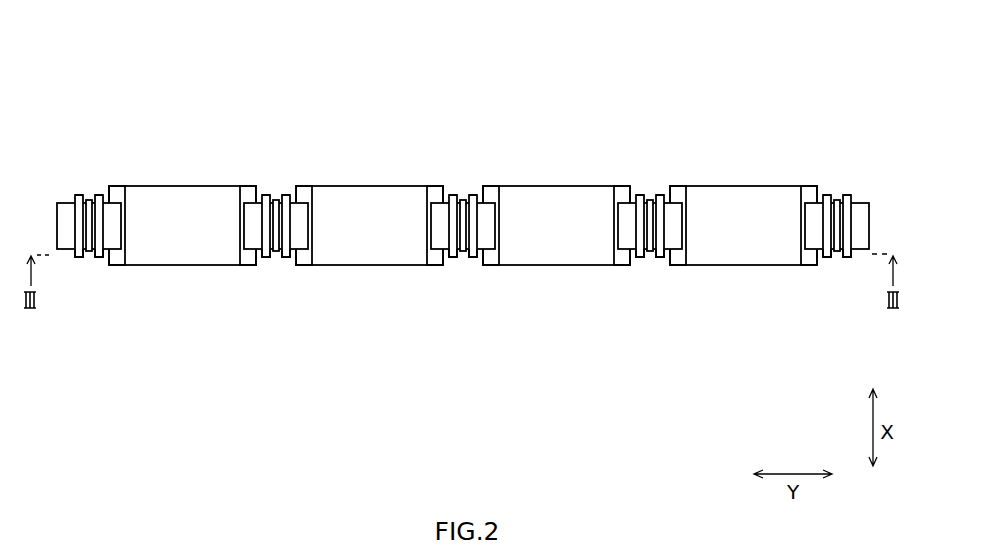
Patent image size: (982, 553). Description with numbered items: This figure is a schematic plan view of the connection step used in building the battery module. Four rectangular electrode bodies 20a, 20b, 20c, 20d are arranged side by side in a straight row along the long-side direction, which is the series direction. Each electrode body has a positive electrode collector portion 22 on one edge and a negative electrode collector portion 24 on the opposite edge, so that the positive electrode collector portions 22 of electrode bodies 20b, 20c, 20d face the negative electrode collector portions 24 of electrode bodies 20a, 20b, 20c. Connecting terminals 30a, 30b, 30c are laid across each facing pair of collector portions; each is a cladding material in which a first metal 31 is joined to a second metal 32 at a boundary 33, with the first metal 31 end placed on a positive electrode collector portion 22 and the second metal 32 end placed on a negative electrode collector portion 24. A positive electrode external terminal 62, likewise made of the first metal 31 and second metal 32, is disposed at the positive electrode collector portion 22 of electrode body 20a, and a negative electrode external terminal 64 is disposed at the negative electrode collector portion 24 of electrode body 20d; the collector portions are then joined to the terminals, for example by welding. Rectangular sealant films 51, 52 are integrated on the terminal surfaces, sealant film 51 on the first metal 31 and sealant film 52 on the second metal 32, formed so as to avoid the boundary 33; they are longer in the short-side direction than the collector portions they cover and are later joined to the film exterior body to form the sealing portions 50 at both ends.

The electrode body 20a is at (743, 121).
The electrode body 20b is at (556, 121).
The electrode body 20c is at (369, 121).
The electrode body 20d is at (182, 121).
The positive electrode collector portion 22 is at (247, 186).
The negative electrode collector portion 24 is at (118, 186).
The connecting terminal 30a is at (656, 70).
The connecting terminal 30b is at (469, 70).
The connecting terminal 30c is at (282, 70).
The first metal 31 is at (79, 194).
The second metal 32 is at (99, 194).
The boundary 33 is at (89, 199).
The sealing portion 50 is at (94, 338).
The sealant film 51 is at (79, 258).
The sealant film 52 is at (99, 258).
The positive electrode external terminal 62 is at (844, 70).
The negative electrode external terminal 64 is at (94, 70).